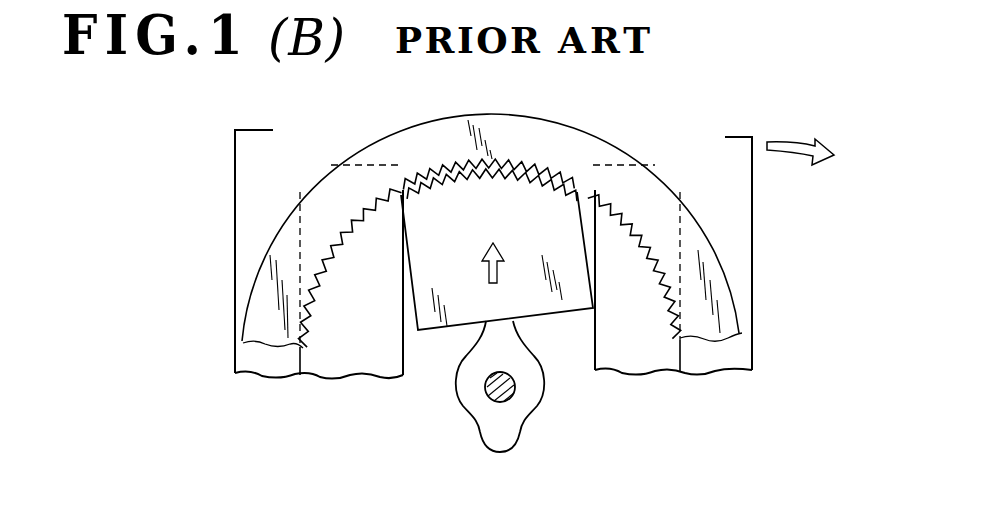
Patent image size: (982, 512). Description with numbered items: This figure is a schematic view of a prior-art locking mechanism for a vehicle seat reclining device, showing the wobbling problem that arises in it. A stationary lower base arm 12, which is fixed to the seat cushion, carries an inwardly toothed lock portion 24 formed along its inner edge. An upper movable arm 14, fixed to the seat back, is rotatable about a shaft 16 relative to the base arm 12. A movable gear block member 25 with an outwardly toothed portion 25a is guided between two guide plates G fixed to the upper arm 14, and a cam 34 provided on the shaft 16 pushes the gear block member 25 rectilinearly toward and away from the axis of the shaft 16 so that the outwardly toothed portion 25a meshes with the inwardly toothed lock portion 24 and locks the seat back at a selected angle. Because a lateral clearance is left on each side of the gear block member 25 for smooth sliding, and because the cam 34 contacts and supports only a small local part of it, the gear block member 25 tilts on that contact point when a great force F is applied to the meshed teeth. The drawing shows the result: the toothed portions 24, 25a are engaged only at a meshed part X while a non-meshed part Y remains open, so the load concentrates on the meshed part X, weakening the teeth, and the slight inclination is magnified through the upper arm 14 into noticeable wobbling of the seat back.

The upper movable arm 14 is at (254, 190).
The stationary lower base arm 12 is at (258, 300).
The inwardly toothed lock portion 24 is at (433, 173).
The gear block member 25 is at (578, 286).
The outwardly toothed portion 25a is at (478, 183).
The shaft 16 is at (494, 388).
The cam 34 is at (542, 408).
The guide plates G is at (347, 363).
The meshed part X is at (552, 130).
The non-meshed part Y is at (417, 213).
The great force F is at (800, 137).